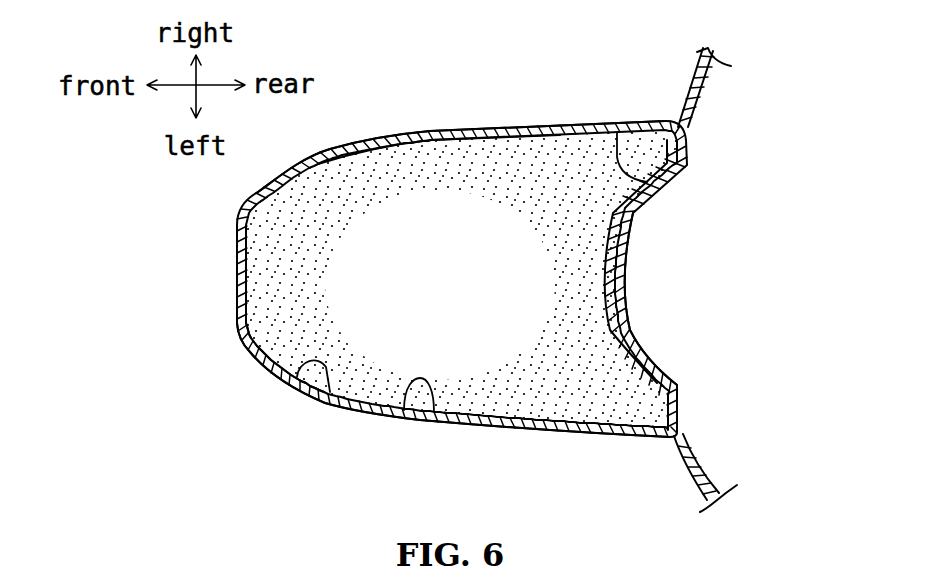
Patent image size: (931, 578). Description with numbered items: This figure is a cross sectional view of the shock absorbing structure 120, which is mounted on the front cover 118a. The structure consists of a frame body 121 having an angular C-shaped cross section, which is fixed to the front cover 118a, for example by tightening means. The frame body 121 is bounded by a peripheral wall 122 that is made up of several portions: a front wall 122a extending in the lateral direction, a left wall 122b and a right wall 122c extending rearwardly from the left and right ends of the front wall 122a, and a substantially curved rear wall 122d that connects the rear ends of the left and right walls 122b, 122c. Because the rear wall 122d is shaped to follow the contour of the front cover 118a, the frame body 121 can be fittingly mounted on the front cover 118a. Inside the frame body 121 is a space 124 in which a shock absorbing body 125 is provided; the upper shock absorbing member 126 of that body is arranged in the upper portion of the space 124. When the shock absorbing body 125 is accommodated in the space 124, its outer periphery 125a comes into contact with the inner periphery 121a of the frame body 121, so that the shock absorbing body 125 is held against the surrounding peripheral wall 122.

The shock absorbing structure 120 is at (538, 88).
The front cover 118a is at (620, 130).
The frame body 121 is at (345, 422).
The inner periphery 121a is at (307, 398).
The peripheral wall 122 is at (237, 323).
The front wall 122a is at (237, 270).
The left wall 122b is at (485, 425).
The right wall 122c is at (383, 137).
The rear wall 122d is at (623, 264).
The space 124 is at (428, 410).
The shock absorbing body 125 is at (487, 190).
The outer periphery 125a is at (437, 133).
The upper shock absorbing member 126 is at (545, 190).